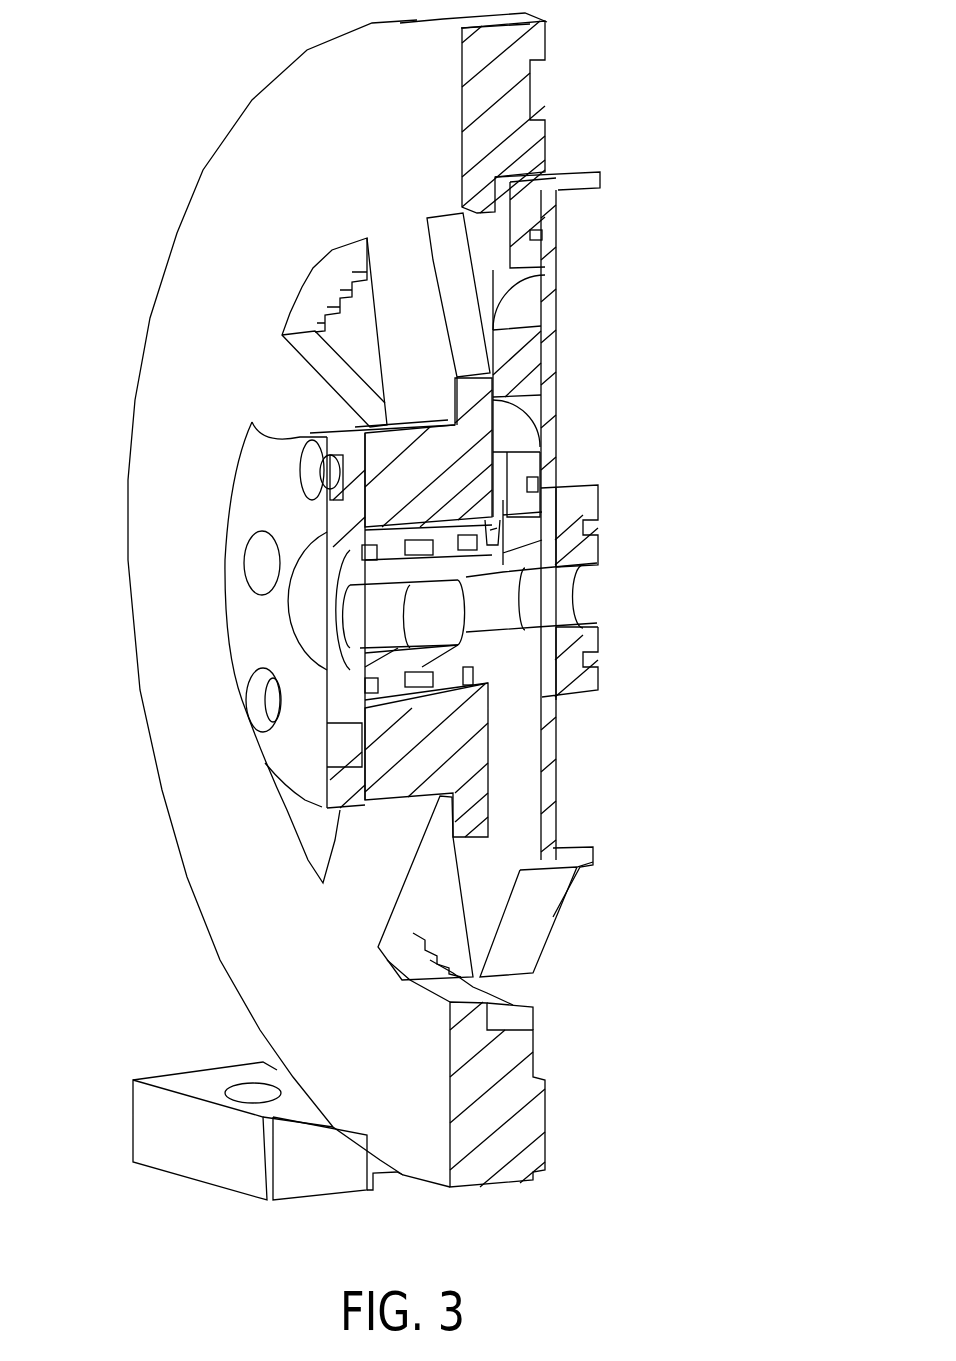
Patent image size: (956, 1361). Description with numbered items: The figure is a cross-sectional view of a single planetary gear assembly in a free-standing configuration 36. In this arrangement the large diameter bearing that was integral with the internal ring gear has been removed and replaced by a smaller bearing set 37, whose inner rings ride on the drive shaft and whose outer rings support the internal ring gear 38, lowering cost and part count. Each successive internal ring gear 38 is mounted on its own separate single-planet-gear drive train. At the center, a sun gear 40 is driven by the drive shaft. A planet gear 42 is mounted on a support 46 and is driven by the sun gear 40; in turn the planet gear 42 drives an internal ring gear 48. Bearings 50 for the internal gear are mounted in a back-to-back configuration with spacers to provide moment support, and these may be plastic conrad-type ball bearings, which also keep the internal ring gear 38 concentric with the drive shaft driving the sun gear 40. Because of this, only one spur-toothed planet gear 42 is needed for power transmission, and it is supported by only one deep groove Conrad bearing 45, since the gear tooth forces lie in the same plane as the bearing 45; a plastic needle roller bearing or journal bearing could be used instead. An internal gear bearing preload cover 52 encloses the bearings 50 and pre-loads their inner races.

The free-standing configuration 36 is at (712, 174).
The bearing set 37 is at (632, 152).
The internal ring gear 38 is at (230, 285).
The sun gear 40 is at (503, 607).
The planet gear 42 is at (537, 217).
The deep groove (Conrad) bearing 45 is at (541, 480).
The support 46 is at (553, 822).
The internal ring gear 48 is at (487, 995).
The bearings 50 is at (373, 620).
The internal gear bearing preload cover 52 is at (240, 618).